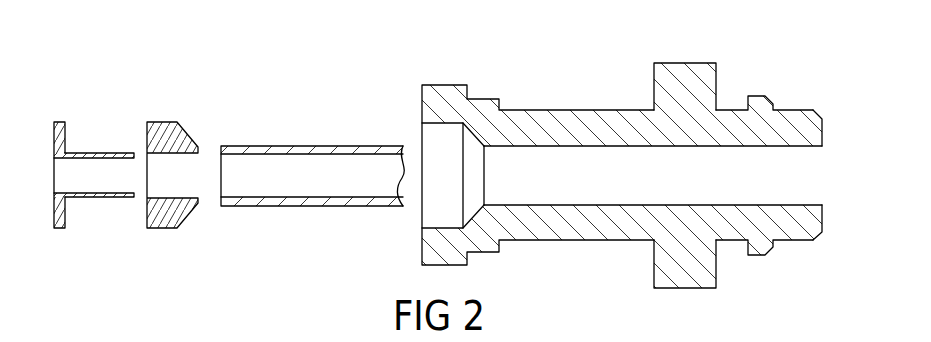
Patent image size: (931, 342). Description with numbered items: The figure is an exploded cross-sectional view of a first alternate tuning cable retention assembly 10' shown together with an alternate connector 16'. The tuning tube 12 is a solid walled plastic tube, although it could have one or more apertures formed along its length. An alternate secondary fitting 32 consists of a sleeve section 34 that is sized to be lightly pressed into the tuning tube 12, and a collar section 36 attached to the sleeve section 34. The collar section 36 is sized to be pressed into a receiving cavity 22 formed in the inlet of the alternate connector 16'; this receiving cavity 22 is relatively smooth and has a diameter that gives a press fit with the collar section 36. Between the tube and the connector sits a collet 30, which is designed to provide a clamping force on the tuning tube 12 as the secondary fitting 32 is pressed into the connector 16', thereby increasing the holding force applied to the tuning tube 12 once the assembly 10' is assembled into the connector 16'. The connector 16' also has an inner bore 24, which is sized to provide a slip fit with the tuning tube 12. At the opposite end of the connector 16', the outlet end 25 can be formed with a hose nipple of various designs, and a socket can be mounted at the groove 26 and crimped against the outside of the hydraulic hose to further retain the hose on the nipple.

The tuning cable retention assembly 10' is at (452, 146).
The tuning tube 12 is at (284, 146).
The alternate connector 16' is at (604, 152).
The receiving cavity 22 is at (423, 211).
The inner bore 24 is at (818, 172).
The outlet end 25 is at (829, 125).
The groove 26 is at (737, 96).
The collet 30 is at (173, 133).
The alternate secondary fitting 32 is at (101, 196).
The sleeve section 34 is at (92, 155).
The collar section 36 is at (60, 122).